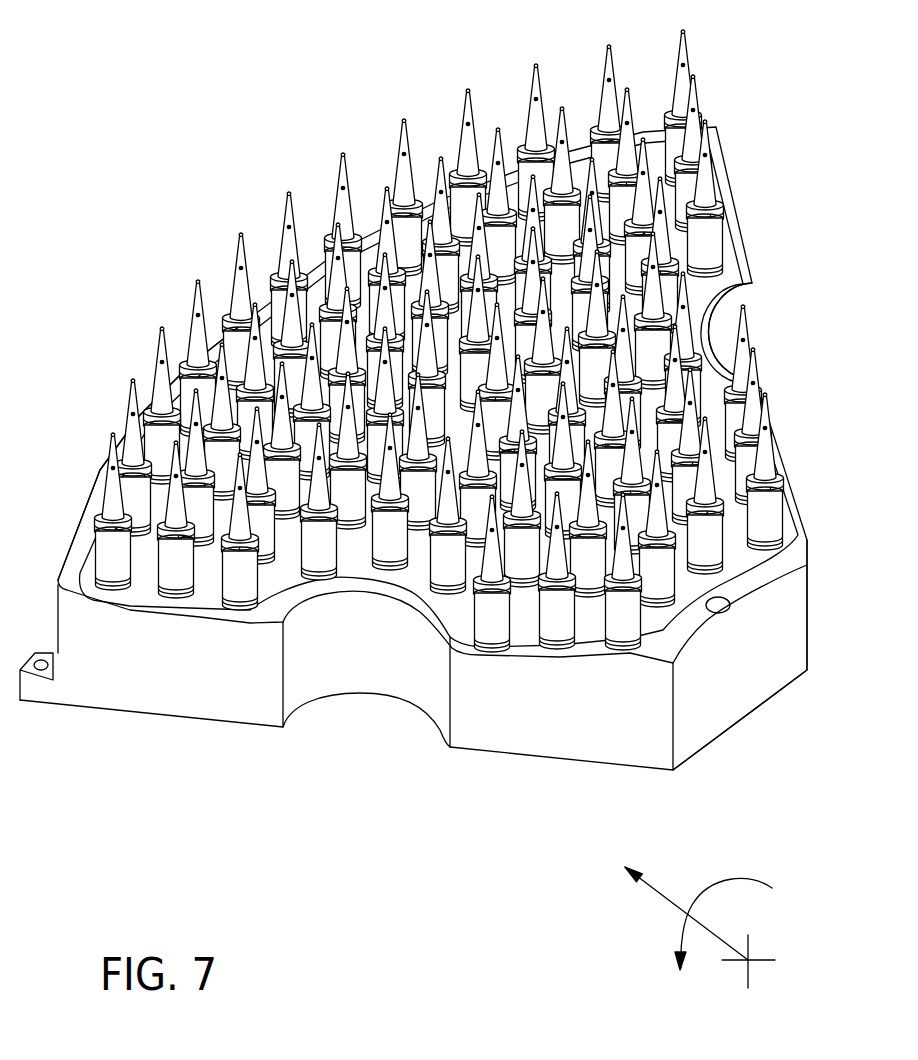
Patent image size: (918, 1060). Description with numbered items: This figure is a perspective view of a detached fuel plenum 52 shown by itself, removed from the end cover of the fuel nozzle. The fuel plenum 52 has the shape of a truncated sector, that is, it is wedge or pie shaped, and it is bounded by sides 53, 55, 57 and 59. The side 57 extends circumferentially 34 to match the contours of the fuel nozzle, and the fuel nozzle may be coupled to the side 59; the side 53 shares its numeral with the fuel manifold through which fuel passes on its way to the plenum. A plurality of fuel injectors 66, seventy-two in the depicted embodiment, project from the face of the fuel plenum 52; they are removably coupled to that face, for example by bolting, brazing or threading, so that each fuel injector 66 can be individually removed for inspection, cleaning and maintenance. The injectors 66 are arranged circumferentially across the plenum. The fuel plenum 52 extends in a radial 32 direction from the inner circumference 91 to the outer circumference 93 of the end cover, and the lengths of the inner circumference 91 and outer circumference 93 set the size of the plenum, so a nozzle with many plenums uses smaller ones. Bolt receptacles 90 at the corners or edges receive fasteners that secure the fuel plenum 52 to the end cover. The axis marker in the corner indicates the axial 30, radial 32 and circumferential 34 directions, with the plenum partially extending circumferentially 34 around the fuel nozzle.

The axial direction 30 is at (750, 963).
The radial direction 32 is at (668, 900).
The circumferential direction 34 is at (702, 892).
The detachable fuel plenum 52 is at (796, 613).
The side 53 is at (183, 678).
The side 55 is at (735, 328).
The side 57 is at (60, 567).
The side 59 is at (283, 585).
The fuel injectors 66 is at (533, 88).
The bolt receptacles 90 is at (32, 673).
The inner circumference 91 is at (690, 733).
The outer circumference 93 is at (80, 512).